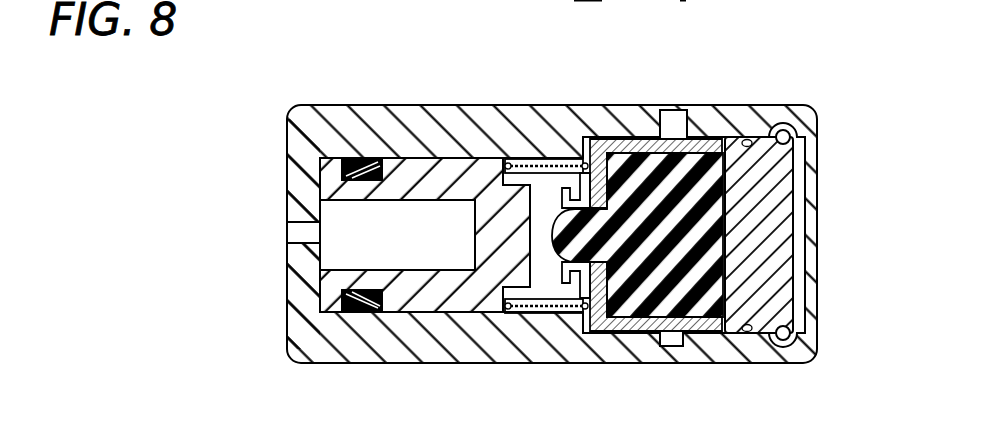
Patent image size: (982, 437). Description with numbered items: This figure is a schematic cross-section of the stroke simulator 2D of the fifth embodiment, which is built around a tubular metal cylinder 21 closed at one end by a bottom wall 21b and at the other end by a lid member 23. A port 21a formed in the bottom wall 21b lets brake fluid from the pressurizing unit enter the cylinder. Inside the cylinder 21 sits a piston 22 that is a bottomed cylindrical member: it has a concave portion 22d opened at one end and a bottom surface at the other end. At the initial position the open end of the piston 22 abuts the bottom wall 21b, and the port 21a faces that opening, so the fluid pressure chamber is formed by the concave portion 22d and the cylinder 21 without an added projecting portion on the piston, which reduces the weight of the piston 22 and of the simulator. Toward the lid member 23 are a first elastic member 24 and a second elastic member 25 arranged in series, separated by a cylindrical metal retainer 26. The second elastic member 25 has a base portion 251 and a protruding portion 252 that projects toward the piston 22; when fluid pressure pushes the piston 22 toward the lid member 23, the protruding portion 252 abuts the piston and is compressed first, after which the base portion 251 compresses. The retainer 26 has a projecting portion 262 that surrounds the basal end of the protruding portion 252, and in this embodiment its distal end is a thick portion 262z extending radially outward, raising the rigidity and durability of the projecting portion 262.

The stroke simulator 2D is at (231, 108).
The cylinder 21 is at (497, 213).
The port 21a is at (293, 235).
The bottom wall 21b is at (297, 180).
The piston 22 is at (361, 293).
The concave portion 22d is at (342, 268).
The lid member 23 is at (780, 200).
The first elastic member 24 is at (517, 303).
The second elastic member 25 is at (630, 142).
The base portion 251 is at (658, 165).
The protruding portion 252 is at (570, 184).
The retainer 26 is at (655, 335).
The projecting portion 262 is at (563, 282).
The thick portion 262z is at (553, 308).